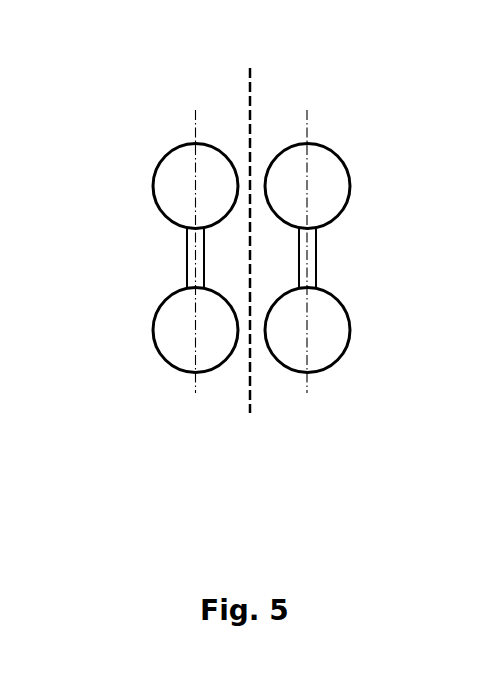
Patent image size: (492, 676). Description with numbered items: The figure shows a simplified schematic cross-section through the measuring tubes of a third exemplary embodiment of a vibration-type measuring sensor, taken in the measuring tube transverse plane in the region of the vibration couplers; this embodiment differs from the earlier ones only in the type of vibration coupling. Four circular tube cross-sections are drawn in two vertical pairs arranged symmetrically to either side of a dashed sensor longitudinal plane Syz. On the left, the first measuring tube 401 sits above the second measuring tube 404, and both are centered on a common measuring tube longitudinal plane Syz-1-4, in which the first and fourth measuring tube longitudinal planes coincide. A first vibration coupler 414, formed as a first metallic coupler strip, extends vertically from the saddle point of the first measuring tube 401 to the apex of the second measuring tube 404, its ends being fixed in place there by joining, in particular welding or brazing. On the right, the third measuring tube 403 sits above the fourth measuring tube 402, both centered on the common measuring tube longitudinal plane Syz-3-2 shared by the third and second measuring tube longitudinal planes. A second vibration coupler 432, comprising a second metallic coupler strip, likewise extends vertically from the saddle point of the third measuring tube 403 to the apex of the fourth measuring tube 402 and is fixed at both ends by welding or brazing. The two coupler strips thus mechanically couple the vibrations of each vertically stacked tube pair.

The first measuring tube 401 is at (177, 145).
The second measuring tube 404 is at (167, 362).
The first vibration coupler 414 is at (187, 250).
The third measuring tube 403 is at (337, 152).
The fourth measuring tube 402 is at (338, 358).
The second vibration coupler 432 is at (310, 252).
The sensor longitudinal plane Syz is at (250, 78).
The common measuring tube longitudinal plane Syz-1-4 is at (193, 385).
The common measuring tube longitudinal plane Syz-3-2 is at (310, 385).